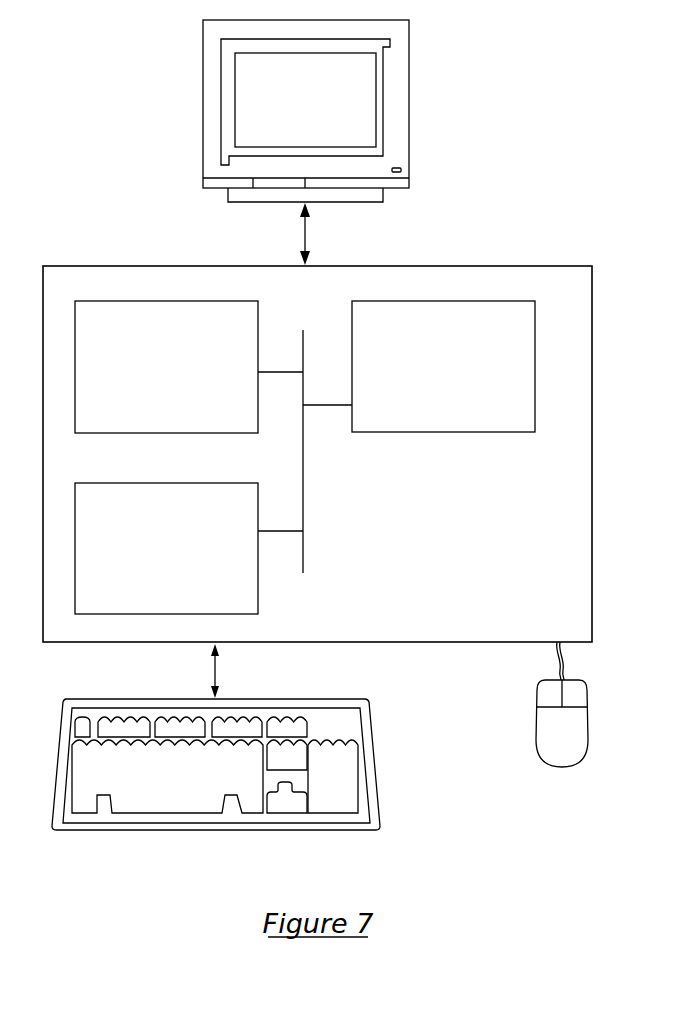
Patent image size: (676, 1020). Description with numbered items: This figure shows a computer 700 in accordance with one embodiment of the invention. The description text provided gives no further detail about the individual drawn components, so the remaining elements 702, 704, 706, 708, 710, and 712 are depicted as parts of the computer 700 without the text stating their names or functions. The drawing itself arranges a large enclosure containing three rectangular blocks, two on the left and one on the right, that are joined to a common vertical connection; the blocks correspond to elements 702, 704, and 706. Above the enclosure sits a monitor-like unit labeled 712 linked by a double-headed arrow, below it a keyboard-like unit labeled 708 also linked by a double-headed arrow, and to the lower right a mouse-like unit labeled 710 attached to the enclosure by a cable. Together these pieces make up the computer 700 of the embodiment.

The computer 700 is at (568, 170).
The processor 702 is at (428, 369).
The memory 704 is at (149, 378).
The storage device 706 is at (145, 561).
The keyboard 708 is at (142, 798).
The mouse 710 is at (544, 741).
The display monitor 712 is at (287, 114).